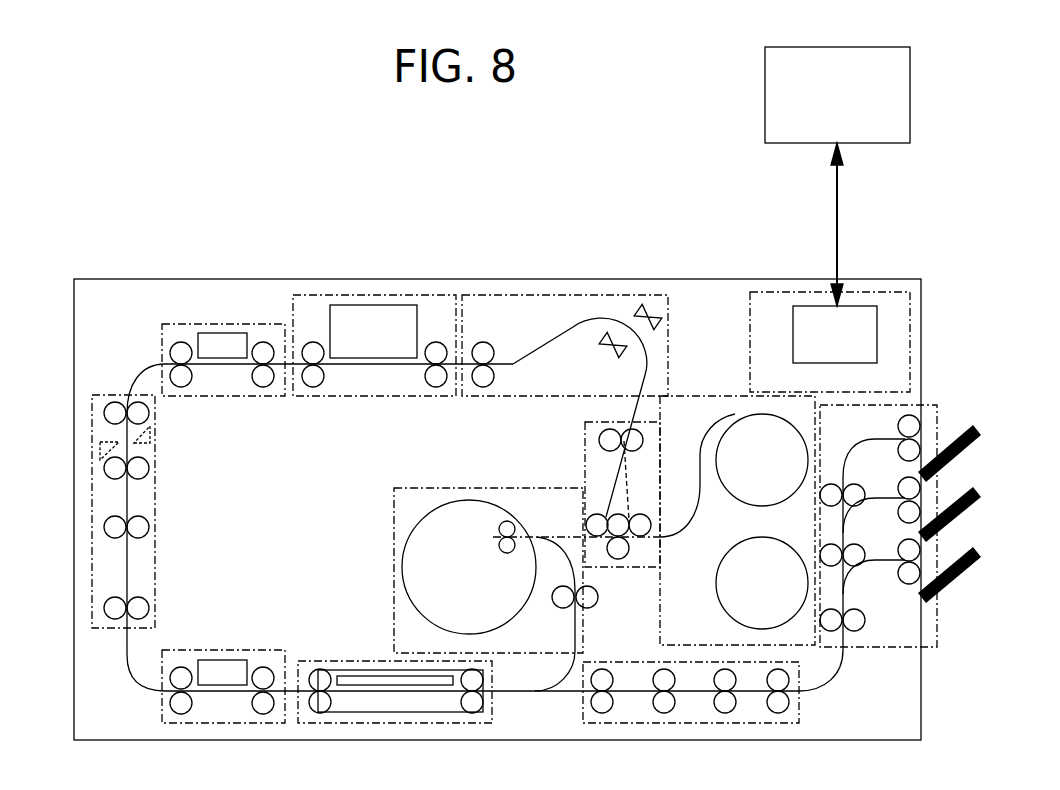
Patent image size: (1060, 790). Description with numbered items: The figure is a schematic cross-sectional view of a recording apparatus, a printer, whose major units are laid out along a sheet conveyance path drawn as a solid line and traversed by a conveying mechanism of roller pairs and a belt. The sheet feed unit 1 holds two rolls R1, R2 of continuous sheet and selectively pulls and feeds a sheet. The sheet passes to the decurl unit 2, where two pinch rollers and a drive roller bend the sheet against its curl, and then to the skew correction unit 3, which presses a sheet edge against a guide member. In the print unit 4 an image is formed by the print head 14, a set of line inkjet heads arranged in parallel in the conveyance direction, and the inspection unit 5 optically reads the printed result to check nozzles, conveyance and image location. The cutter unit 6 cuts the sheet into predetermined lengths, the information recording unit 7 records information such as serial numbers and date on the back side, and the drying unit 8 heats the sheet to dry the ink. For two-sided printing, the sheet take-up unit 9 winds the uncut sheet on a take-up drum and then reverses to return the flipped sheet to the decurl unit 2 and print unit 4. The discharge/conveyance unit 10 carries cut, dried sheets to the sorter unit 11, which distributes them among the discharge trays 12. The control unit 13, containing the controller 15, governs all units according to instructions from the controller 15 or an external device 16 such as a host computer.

The sheet feed unit 1 is at (688, 405).
The decurl unit 2 is at (595, 475).
The skew correction unit 3 is at (532, 310).
The print unit 4 is at (432, 305).
The inspection unit 5 is at (262, 333).
The cutter unit 6 is at (108, 432).
The information recording unit 7 is at (227, 710).
The drying unit 8 is at (398, 717).
The sheet take-up unit 9 is at (408, 615).
The discharge/conveyance unit 10 is at (630, 712).
The sorter unit 11 is at (895, 628).
The discharge trays 12 is at (975, 477).
The control unit 13 is at (905, 292).
The print head 14 is at (370, 318).
The controller 15 is at (866, 292).
The external device 16 is at (910, 90).
The roll R1 is at (745, 432).
The roll R2 is at (730, 597).